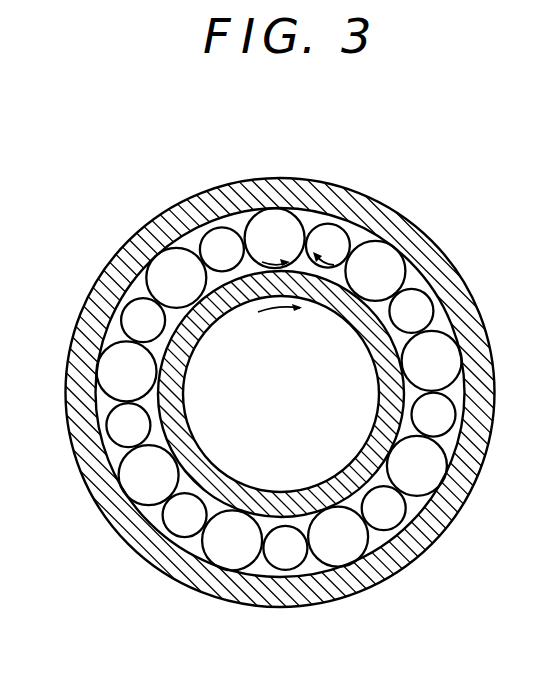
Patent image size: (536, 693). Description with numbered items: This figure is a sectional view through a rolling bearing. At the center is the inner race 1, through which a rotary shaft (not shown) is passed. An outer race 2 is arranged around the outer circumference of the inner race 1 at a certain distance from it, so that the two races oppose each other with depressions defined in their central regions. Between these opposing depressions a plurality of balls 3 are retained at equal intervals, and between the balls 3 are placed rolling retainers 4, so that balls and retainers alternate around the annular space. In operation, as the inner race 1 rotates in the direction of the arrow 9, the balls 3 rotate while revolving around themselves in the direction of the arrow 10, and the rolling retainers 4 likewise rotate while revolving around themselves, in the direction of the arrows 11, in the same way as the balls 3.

The inner race 1 is at (213, 470).
The outer race 2 is at (172, 557).
The balls 3 is at (265, 225).
The rolling retainers 4 is at (330, 228).
The arrow 9 is at (276, 312).
The arrow 10 is at (292, 243).
The arrows 11 is at (320, 260).